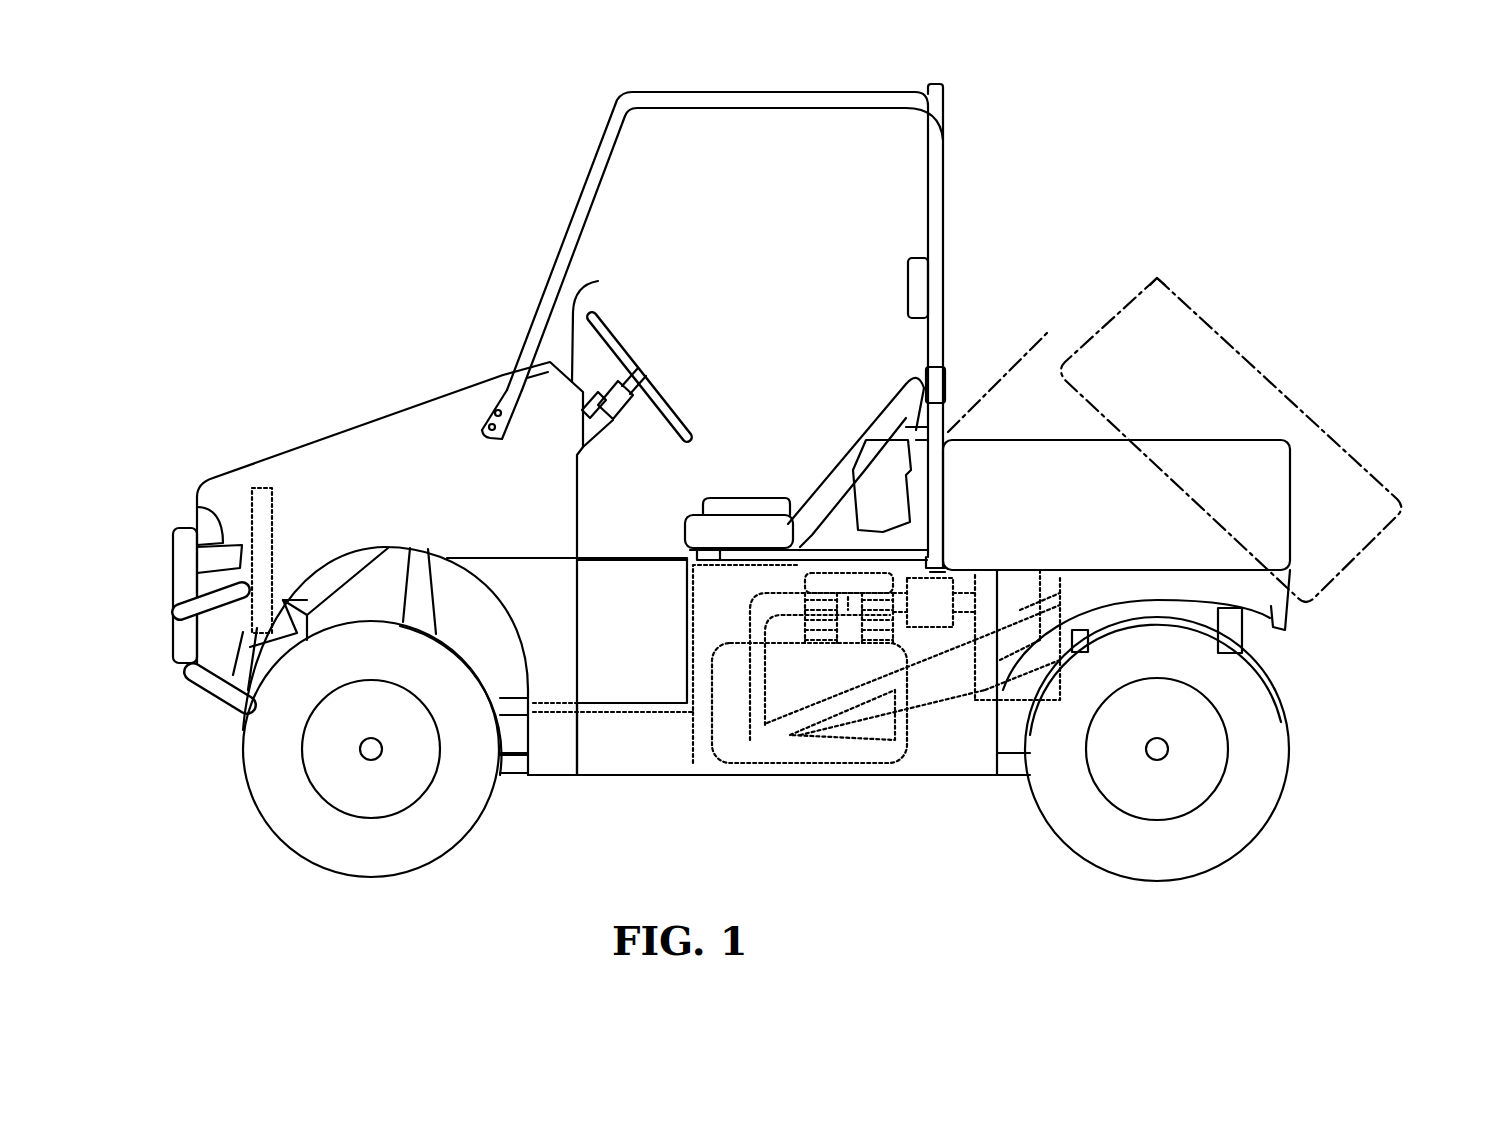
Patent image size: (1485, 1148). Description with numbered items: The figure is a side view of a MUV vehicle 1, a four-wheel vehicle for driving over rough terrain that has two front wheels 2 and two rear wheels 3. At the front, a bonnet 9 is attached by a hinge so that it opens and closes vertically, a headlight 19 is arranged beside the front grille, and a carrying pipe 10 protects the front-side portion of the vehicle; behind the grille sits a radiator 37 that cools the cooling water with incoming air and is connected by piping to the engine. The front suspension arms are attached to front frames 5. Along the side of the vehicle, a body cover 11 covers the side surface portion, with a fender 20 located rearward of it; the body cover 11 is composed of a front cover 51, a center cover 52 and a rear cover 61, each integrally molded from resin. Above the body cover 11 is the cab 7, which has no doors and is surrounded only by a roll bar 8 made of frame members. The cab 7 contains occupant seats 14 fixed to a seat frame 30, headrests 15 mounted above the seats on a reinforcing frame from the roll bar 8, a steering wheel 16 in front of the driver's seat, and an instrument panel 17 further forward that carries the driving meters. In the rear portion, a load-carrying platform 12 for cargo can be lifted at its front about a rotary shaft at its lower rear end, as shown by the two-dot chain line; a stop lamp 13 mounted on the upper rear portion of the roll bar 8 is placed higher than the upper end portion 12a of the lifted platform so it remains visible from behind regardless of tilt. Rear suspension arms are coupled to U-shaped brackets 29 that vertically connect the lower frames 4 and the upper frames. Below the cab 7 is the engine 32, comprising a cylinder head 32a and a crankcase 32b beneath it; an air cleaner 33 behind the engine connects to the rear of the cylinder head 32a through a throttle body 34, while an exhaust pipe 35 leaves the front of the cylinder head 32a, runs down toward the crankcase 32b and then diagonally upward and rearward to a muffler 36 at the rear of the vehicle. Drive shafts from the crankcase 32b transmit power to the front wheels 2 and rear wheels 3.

The MUV vehicle 1 is at (1233, 108).
The front wheels 2 is at (447, 835).
The rear wheels 3 is at (1230, 835).
The lower frames 4 is at (515, 767).
The front frames 5 is at (250, 647).
The cab 7 is at (762, 213).
The roll bar 8 is at (597, 151).
The bonnet 9 is at (355, 425).
The carrying pipe 10 is at (180, 563).
The body cover 11 is at (643, 748).
The load-carrying platform 12 is at (1232, 348).
The upper end portion of the load-carrying platform 12a is at (1160, 278).
The stop lamp 13 is at (945, 100).
The occupant seats 14 is at (880, 416).
The headrests 15 is at (908, 294).
The steering wheel 16 is at (618, 338).
The instrument panel 17 is at (581, 322).
The headlight 19 is at (197, 508).
The fender 20 is at (1267, 605).
The U-shaped brackets 29 is at (1243, 633).
The seat frame 30 is at (935, 572).
The engine 32 is at (800, 755).
The cylinder head 32a is at (830, 575).
The crankcase 32b is at (872, 755).
The air cleaner 33 is at (1022, 590).
The throttle body 34 is at (970, 560).
The exhaust pipe 35 is at (750, 624).
The muffler 36 is at (1120, 630).
The radiator 37 is at (251, 502).
The front cover 51 is at (563, 580).
The center cover 52 is at (606, 713).
The rear cover 61 is at (693, 765).